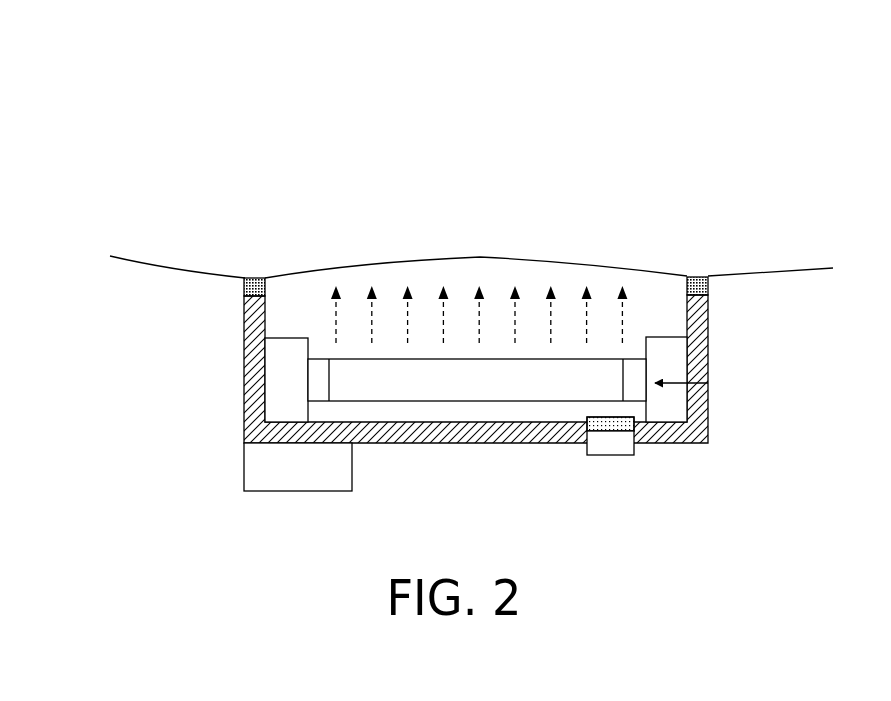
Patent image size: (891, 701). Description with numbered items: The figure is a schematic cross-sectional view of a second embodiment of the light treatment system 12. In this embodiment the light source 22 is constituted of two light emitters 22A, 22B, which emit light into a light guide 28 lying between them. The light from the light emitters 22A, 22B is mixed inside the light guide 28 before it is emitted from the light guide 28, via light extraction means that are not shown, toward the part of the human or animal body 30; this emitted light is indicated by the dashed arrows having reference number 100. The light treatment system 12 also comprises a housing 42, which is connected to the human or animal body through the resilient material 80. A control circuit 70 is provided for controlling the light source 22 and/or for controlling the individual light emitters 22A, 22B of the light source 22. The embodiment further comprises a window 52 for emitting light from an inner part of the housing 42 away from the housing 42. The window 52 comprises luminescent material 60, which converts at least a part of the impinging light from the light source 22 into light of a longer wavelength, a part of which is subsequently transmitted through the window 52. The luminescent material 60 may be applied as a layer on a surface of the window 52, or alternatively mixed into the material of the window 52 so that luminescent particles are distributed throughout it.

The light treatment system 12 is at (698, 142).
The part of the human or animal body 30 is at (268, 233).
The dashed arrows indicating emitted light 100 is at (320, 318).
The housing 42 is at (708, 345).
The resilient material 80 is at (708, 287).
The light source 22 is at (222, 335).
The light emitter 22A is at (318, 390).
The light emitter 22B is at (637, 392).
The light guide 28 is at (386, 390).
The luminescent material 60 is at (588, 427).
The window 52 is at (612, 443).
The control circuit 70 is at (250, 464).